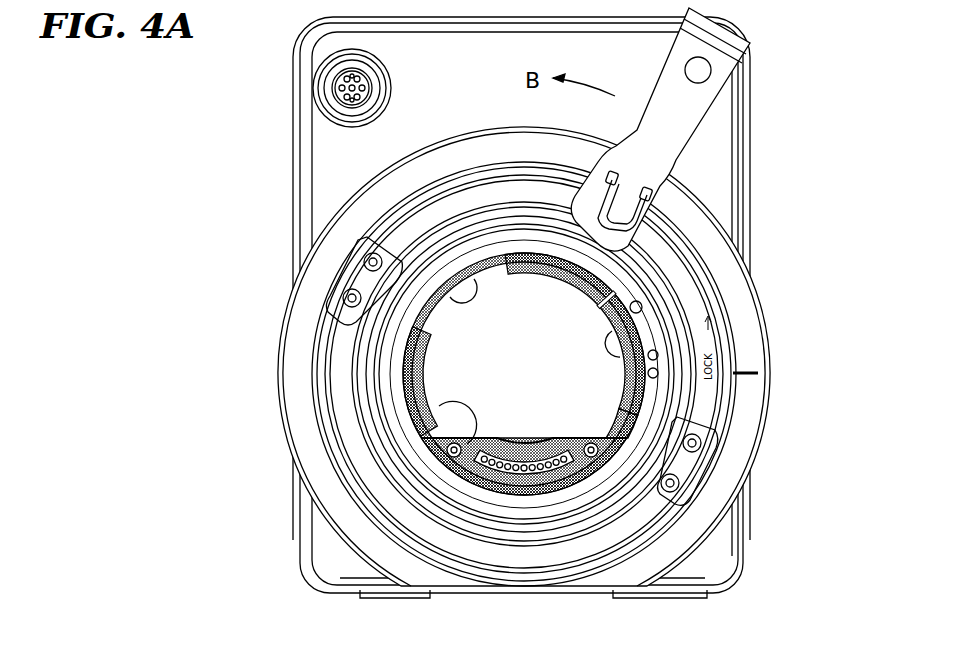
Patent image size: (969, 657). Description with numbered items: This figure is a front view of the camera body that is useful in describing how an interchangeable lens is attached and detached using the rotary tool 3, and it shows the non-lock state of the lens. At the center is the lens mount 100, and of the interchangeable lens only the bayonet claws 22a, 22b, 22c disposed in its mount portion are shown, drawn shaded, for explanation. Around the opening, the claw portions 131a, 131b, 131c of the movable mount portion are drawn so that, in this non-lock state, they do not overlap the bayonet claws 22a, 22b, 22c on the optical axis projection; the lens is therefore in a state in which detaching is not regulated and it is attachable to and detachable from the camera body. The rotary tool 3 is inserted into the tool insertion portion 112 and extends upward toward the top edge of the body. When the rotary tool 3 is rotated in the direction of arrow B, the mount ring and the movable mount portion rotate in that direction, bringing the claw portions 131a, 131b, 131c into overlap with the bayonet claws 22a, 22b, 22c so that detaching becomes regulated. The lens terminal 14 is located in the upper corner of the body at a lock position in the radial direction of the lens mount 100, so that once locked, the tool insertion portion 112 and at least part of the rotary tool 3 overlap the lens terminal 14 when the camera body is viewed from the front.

The rotary tool 3 is at (688, 120).
The lens terminal 14 is at (323, 85).
The bayonet claw 22a is at (603, 273).
The bayonet claw 22b is at (625, 425).
The bayonet claw 22c is at (408, 345).
The lens mount 100 is at (350, 380).
The tool insertion portion 112 is at (640, 186).
The claw portion 131a is at (625, 325).
The claw portion 131b is at (465, 420).
The claw portion 131c is at (452, 297).